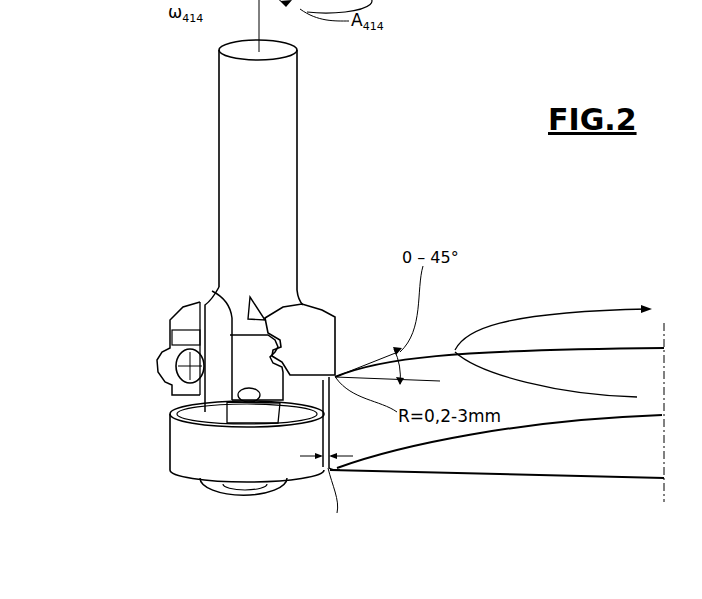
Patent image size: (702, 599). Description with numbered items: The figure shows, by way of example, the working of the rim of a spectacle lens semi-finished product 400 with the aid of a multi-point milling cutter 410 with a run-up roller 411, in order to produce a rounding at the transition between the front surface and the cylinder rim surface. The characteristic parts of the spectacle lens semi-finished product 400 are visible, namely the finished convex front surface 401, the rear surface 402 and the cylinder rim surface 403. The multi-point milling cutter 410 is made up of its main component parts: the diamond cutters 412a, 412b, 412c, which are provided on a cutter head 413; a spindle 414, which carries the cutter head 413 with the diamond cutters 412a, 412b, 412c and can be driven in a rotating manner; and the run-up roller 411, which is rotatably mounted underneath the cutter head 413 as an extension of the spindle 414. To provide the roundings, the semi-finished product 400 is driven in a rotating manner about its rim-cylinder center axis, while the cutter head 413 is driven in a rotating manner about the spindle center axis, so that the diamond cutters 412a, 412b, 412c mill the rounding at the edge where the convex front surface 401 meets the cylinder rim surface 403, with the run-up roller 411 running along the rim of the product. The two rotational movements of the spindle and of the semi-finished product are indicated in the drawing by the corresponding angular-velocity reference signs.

The multi-point milling cutter 410 is at (227, 136).
The spindle 414 is at (285, 200).
The cutter head 413 is at (212, 291).
The spectacle lens semi-finished product 400 is at (368, 346).
The finished convex front surface 401 is at (528, 350).
The rear surface 402 is at (470, 433).
The cylinder rim surface 403 is at (332, 437).
The run-up roller 411 is at (185, 443).
The diamond cutter 412a is at (157, 380).
The diamond cutter 412b is at (287, 370).
The diamond cutter 412c is at (290, 396).